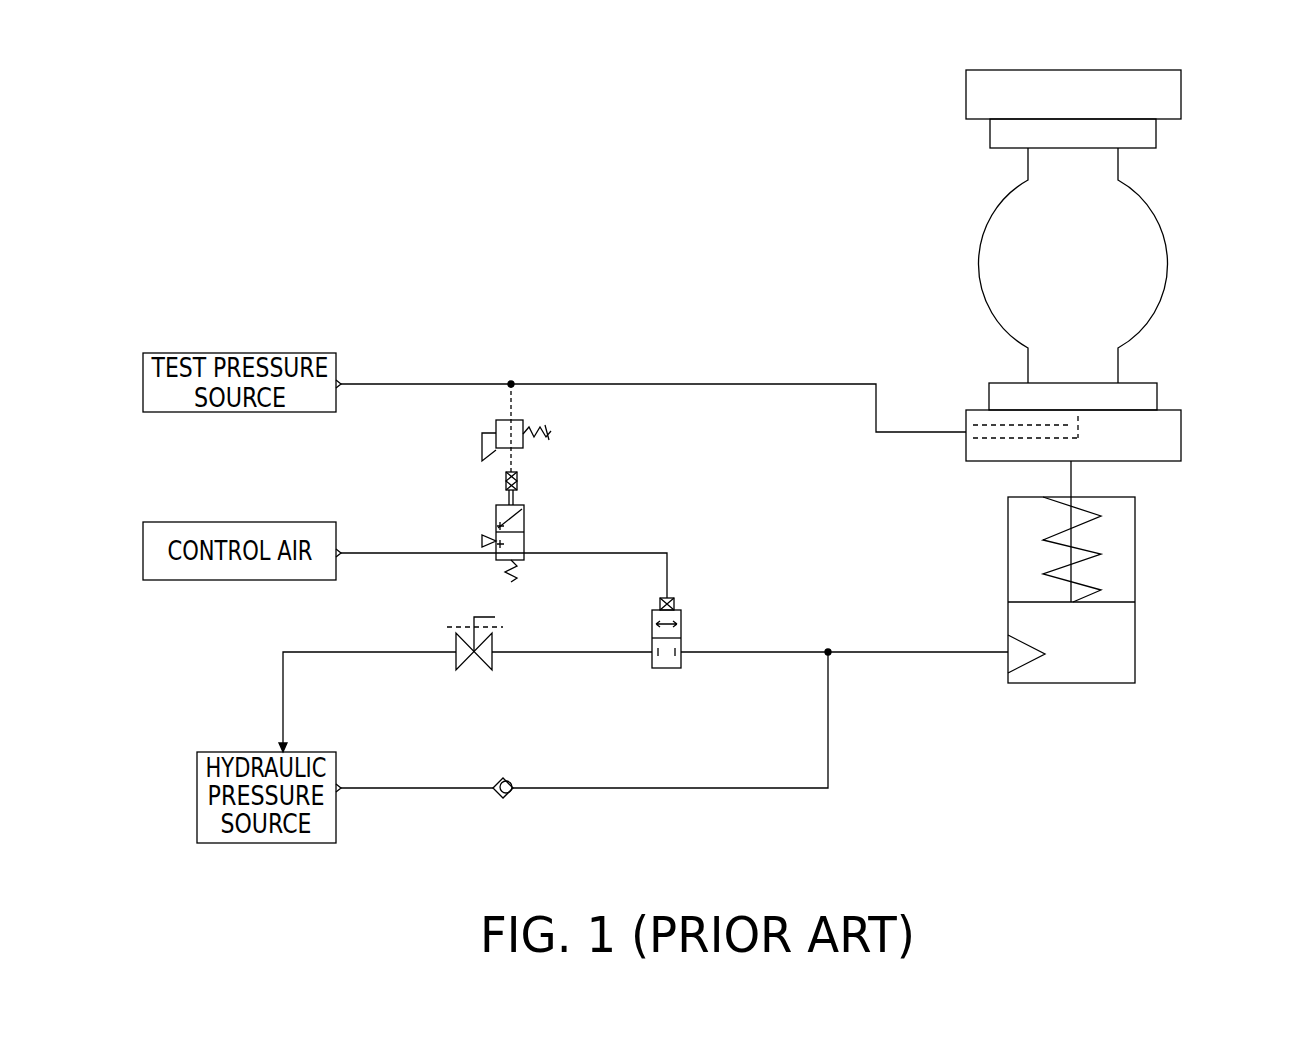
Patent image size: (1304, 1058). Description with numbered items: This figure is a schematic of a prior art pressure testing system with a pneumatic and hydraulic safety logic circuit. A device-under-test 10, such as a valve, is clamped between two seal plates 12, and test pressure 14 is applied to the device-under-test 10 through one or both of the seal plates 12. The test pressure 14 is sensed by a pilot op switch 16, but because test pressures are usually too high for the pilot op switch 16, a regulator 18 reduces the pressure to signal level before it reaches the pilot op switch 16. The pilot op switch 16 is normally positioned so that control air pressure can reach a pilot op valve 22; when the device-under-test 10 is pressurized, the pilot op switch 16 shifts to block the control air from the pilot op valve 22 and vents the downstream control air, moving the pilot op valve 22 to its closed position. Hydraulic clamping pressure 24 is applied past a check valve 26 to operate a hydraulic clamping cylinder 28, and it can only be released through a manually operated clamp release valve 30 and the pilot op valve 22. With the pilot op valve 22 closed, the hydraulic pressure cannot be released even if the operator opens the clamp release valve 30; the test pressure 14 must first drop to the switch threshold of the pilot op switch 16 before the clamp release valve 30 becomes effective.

The device-under-test 10 is at (1166, 235).
The seal plates 12 is at (1182, 92).
The test pressure 14 is at (645, 384).
The pilot op switch 16 is at (502, 505).
The regulator 18 is at (504, 420).
The pilot op valve 22 is at (652, 620).
The hydraulic clamping pressure 24 is at (692, 788).
The check valve 26 is at (498, 778).
The hydraulic clamping cylinder 28 is at (1135, 555).
The manually operated clamp release valve 30 is at (492, 657).